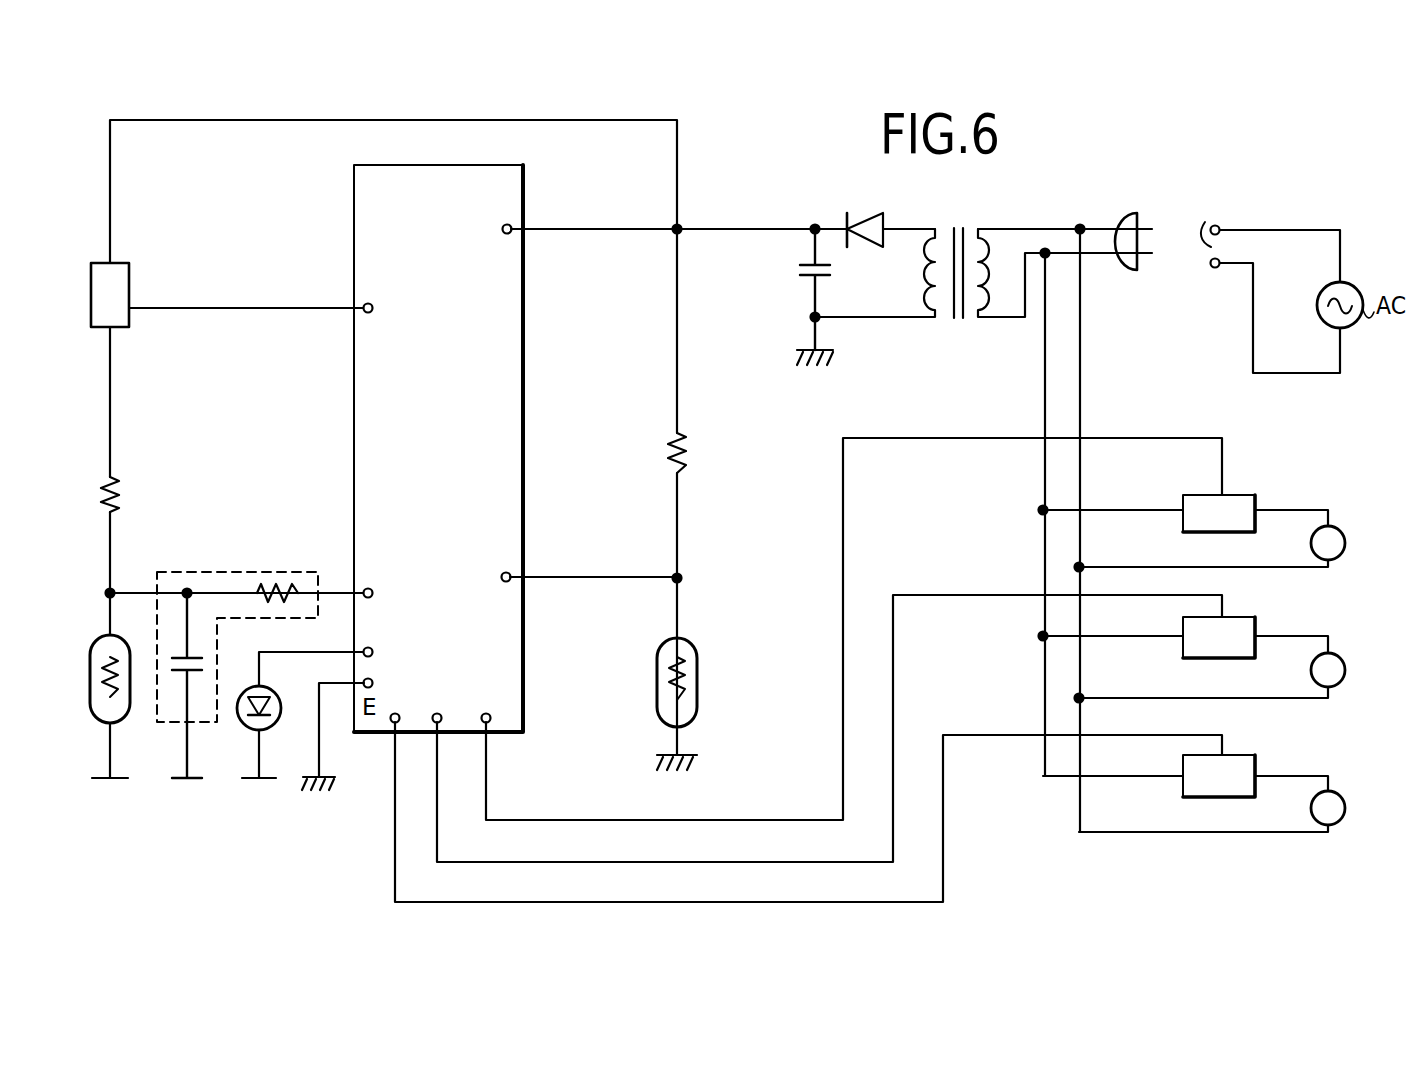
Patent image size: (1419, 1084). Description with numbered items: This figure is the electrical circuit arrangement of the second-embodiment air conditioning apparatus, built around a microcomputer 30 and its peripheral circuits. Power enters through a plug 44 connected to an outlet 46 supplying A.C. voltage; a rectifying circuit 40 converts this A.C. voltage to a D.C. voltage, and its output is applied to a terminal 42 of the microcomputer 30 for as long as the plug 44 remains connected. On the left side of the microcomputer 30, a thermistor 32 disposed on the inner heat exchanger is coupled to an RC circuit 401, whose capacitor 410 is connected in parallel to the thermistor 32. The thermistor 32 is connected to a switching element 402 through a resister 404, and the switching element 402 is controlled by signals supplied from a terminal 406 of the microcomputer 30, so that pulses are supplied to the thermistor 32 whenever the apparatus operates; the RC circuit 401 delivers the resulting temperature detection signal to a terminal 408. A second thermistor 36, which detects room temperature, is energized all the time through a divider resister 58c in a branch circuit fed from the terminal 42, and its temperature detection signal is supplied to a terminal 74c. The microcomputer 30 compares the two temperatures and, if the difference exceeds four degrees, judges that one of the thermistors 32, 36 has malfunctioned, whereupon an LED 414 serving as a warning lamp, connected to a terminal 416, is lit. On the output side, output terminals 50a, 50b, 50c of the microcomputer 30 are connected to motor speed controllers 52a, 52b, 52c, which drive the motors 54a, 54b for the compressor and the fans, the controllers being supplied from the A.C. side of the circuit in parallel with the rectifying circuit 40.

The microcomputer 30 is at (405, 163).
The thermistor 32 is at (90, 712).
The thermistor 36 is at (697, 702).
The rectifying circuit 40 is at (944, 224).
The terminal 42 is at (659, 230).
The plug 44 is at (1122, 222).
The outlet 46 is at (1208, 222).
The output terminal 50a is at (802, 794).
The output terminal 50b is at (823, 728).
The output terminal 50c is at (847, 629).
The motor speed controller 52a is at (1228, 495).
The motor speed controller 52b is at (1228, 617).
The motor speed controller 52c is at (1228, 755).
The motor 54a is at (1343, 553).
The motor 54b is at (1343, 679).
The divider resister 58c is at (684, 462).
The terminal 74c is at (569, 579).
The RC circuit 401 is at (193, 572).
The switching element 402 is at (129, 300).
The resister 404 is at (119, 503).
The terminal 406 is at (276, 308).
The terminal 408 is at (265, 595).
The capacitor 410 is at (172, 672).
The LED 414 is at (277, 694).
The terminal 416 is at (393, 653).